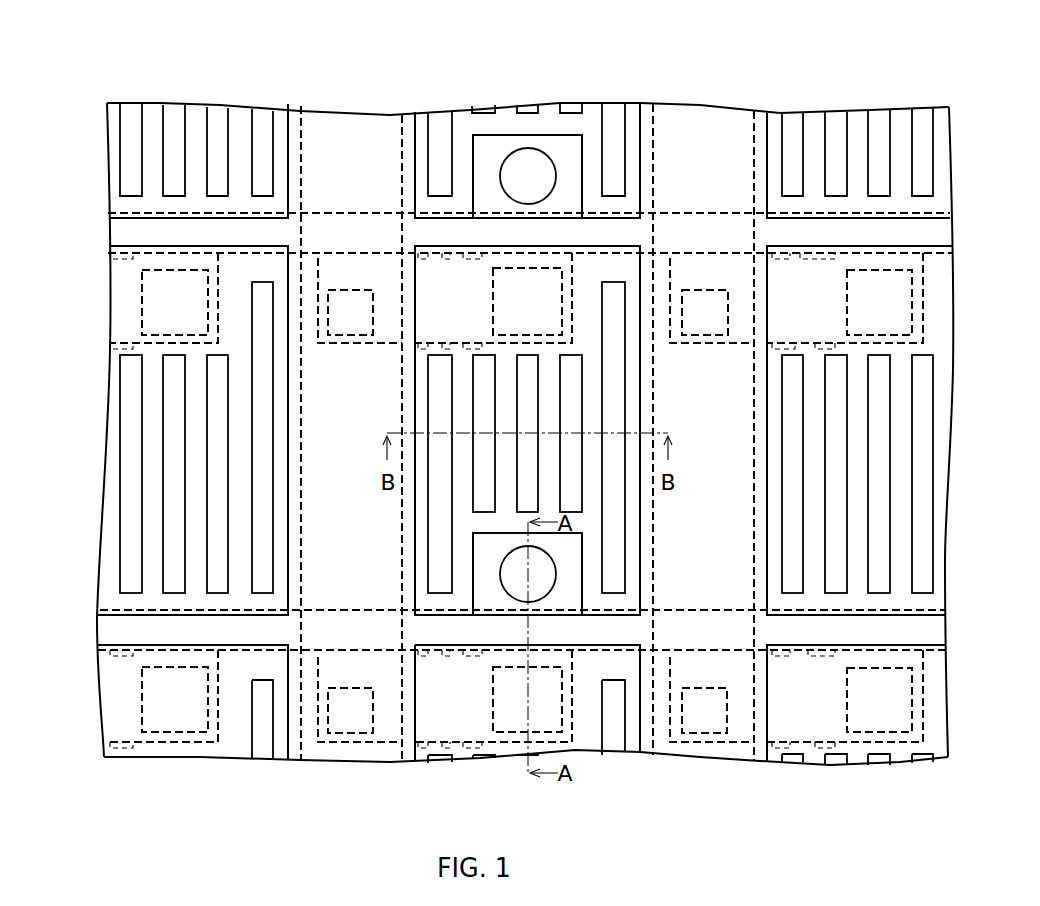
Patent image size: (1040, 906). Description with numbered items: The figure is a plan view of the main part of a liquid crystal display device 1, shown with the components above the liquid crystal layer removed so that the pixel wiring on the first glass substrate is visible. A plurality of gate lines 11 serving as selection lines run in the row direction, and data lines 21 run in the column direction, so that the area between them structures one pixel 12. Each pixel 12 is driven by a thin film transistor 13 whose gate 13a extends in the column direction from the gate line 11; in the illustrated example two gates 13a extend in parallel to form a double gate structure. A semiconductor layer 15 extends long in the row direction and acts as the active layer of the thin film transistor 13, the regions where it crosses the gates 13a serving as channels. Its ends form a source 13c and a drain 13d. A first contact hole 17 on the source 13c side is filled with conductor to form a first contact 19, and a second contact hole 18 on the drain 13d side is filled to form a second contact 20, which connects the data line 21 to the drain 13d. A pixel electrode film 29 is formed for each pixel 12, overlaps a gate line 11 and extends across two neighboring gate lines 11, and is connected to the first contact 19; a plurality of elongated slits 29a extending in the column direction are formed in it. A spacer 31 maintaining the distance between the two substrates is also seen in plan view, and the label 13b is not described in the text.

The liquid crystal display device 1 is at (935, 63).
The gate line 11 is at (118, 226).
The pixel 12 is at (411, 520).
The thin film transistor 13 is at (333, 348).
The gate 13a is at (828, 345).
The second wiring portion 13b is at (835, 714).
The source 13c is at (911, 758).
The drain 13d is at (700, 758).
The semiconductor layer 15 is at (351, 305).
The first contact hole 17 is at (527, 752).
The second contact hole 18 is at (350, 763).
The first contact 19 is at (898, 313).
The second contact 20 is at (345, 292).
The data line 21 is at (316, 125).
The pixel electrode film 29 is at (597, 265).
The slit 29a is at (613, 303).
The spacer 31 is at (526, 170).